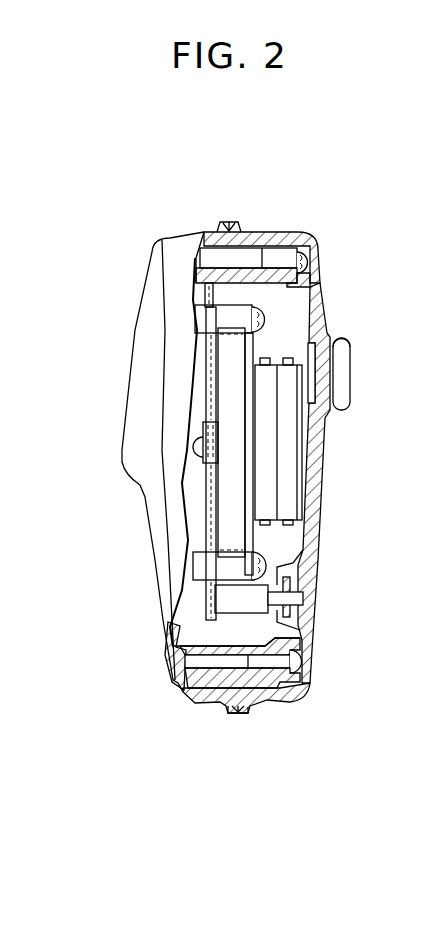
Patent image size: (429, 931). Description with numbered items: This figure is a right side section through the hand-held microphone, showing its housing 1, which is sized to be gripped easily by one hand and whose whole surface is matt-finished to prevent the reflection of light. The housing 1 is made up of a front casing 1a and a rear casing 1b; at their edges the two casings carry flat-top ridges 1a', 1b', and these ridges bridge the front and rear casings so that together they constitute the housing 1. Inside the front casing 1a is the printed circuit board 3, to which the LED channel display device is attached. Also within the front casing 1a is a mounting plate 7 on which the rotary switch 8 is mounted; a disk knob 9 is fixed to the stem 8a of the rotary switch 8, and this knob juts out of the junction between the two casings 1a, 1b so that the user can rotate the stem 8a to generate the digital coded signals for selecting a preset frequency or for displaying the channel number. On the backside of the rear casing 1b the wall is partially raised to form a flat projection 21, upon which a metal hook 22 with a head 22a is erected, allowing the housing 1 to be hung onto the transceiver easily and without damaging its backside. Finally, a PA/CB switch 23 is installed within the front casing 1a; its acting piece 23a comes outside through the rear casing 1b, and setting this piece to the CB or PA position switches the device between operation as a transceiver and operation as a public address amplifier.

The housing 1 is at (288, 220).
The front casing 1a is at (216, 450).
The flat-top ridge 1a' is at (213, 461).
The rear casing 1b is at (324, 470).
The flat-top ridge 1b' is at (258, 461).
The printed circuit board 3 is at (208, 363).
The mounting plate 7 is at (268, 340).
The rotary switch 8 is at (260, 458).
The stem 8a is at (203, 462).
The disk knob 9 is at (227, 537).
The flat projection 21 is at (330, 410).
The metal hook 22 is at (333, 373).
The head 22a is at (350, 340).
The PA/CB switch 23 is at (222, 603).
The acting piece 23a is at (303, 598).